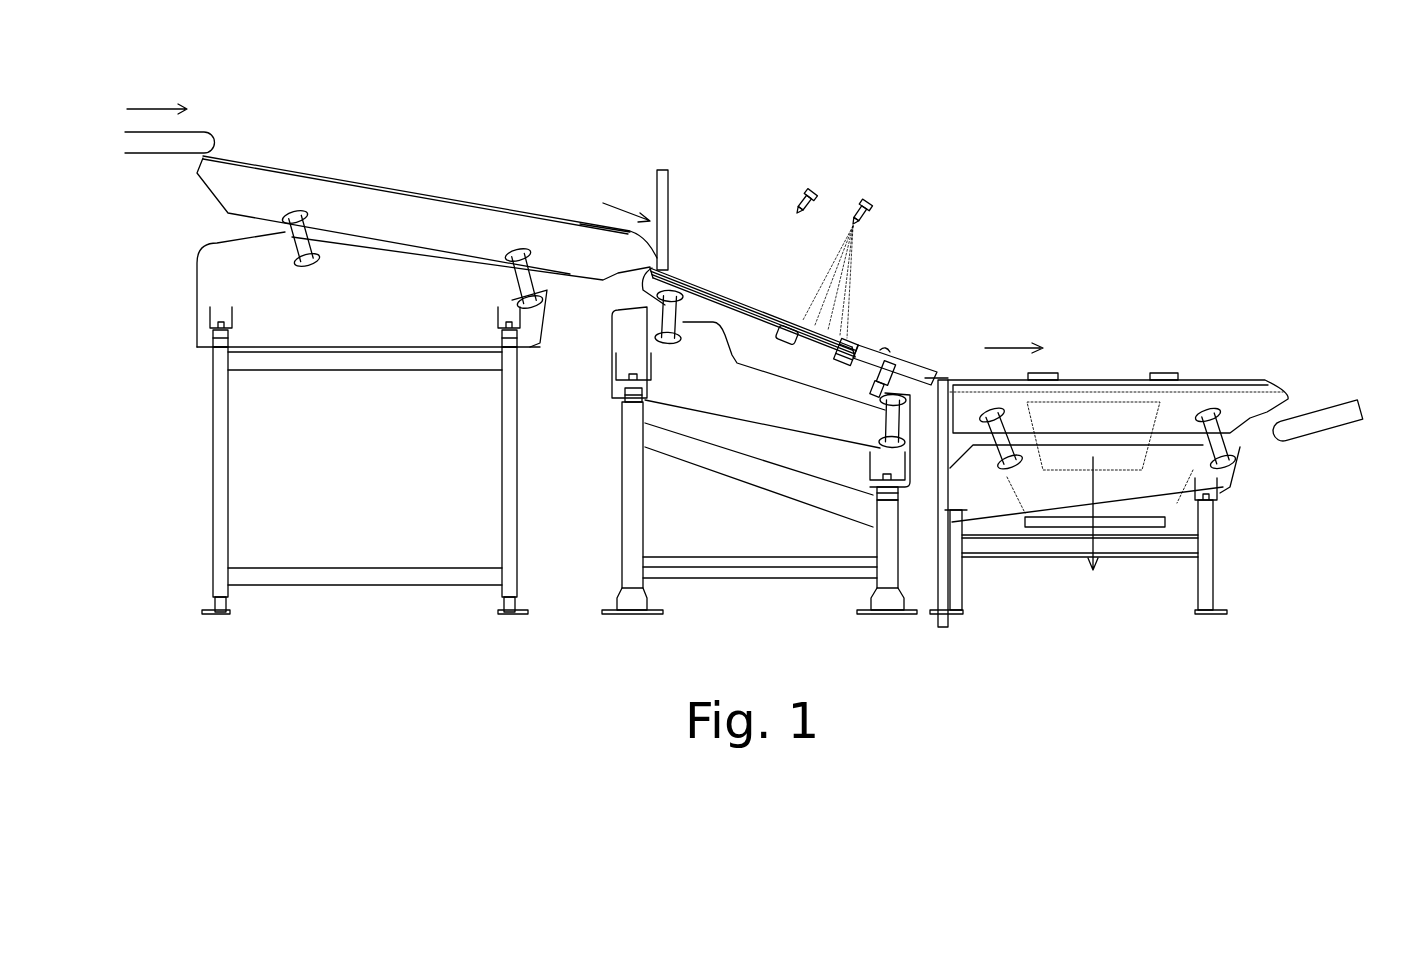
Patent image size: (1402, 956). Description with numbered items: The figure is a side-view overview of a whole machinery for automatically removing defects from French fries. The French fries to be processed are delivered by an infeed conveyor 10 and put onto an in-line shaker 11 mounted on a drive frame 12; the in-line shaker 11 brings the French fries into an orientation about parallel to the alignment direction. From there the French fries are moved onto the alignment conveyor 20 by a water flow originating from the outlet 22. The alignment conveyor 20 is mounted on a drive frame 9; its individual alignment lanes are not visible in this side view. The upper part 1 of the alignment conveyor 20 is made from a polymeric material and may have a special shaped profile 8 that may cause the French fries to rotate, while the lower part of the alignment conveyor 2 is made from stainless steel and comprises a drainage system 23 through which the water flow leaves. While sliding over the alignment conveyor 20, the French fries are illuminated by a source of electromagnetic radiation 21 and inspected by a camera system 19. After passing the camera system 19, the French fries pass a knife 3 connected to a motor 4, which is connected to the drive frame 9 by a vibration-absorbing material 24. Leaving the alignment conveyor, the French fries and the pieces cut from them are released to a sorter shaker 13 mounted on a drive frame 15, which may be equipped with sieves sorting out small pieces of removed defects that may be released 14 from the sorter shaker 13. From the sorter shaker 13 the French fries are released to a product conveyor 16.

The upper part of the alignment conveyor 1 is at (728, 293).
The lower part of the alignment conveyor 2 is at (937, 350).
The knife 3 is at (850, 347).
The motor 4 is at (883, 350).
The special shaped profile 8 is at (745, 318).
The drive frame 9 is at (612, 350).
The infeed conveyor 10 is at (197, 130).
The in-line shaker 11 is at (398, 208).
The drive frame 12 is at (207, 333).
The sorter shaker 13 is at (1093, 392).
The release of removed defects 14 is at (1103, 510).
The drive frame 15 is at (1238, 472).
The product conveyor 16 is at (1312, 408).
The camera system 19 is at (863, 223).
The alignment conveyor 20 is at (690, 300).
The source of electromagnetic radiation 21 is at (807, 177).
The outlet 22 is at (662, 170).
The drainage system 23 is at (945, 630).
The vibration-absorbing material 24 is at (930, 367).